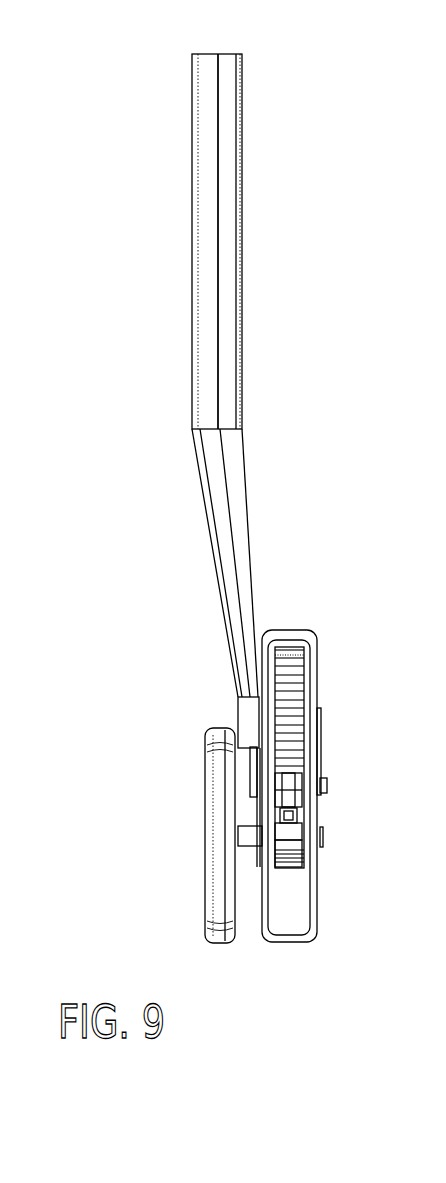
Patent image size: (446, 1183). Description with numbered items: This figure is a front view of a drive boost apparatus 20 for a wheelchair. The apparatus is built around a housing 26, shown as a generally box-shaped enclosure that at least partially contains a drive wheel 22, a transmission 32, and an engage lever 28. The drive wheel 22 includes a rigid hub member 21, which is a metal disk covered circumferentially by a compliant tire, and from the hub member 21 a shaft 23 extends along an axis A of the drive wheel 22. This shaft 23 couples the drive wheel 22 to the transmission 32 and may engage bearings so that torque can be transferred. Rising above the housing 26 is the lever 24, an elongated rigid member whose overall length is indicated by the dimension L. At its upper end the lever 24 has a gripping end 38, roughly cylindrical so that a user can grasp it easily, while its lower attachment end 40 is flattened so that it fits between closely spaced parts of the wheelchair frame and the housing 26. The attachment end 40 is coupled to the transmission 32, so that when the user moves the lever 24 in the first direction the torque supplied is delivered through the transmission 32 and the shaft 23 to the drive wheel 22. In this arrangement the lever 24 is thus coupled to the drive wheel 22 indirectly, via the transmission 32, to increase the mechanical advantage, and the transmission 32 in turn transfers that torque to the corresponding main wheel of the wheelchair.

The lawn edger 20 is at (164, 69).
The hub member 21 is at (201, 823).
The drive wheel 22 is at (208, 880).
The shaft 23 is at (240, 845).
The lever 24 is at (208, 333).
The housing 26 is at (282, 628).
The engage lever 28 is at (248, 766).
The transmission 32 is at (328, 684).
The gripping end 38 is at (213, 96).
The attachment end 40 is at (243, 717).
The length dimension L is at (107, 54).
The axis A is at (342, 837).